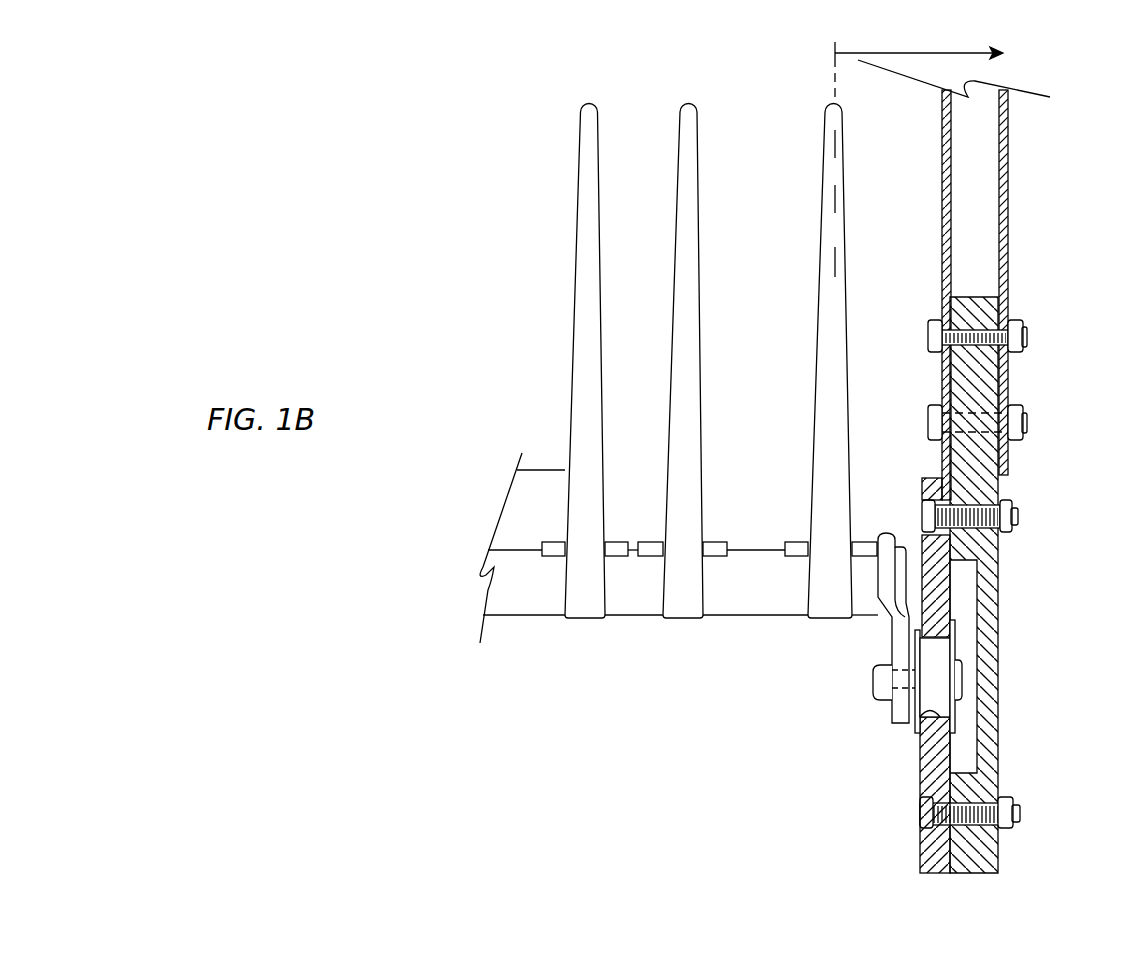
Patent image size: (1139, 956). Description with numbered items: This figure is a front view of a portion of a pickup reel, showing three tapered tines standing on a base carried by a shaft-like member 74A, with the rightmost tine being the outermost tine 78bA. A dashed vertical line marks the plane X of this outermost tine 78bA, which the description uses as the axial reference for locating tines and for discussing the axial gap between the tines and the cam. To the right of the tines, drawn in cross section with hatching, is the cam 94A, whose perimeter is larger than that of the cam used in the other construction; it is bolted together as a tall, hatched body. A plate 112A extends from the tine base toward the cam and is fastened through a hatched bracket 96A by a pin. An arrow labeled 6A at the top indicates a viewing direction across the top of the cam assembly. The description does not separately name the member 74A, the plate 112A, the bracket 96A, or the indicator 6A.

The section view direction indicator 6A is at (883, 50).
The plane of the outermost tine X is at (830, 143).
The outermost tine 78bA is at (818, 325).
The base plate 74A is at (745, 608).
The pivot arm plate 112A is at (957, 627).
The cam 94A is at (1003, 626).
The bracket 96A is at (908, 722).